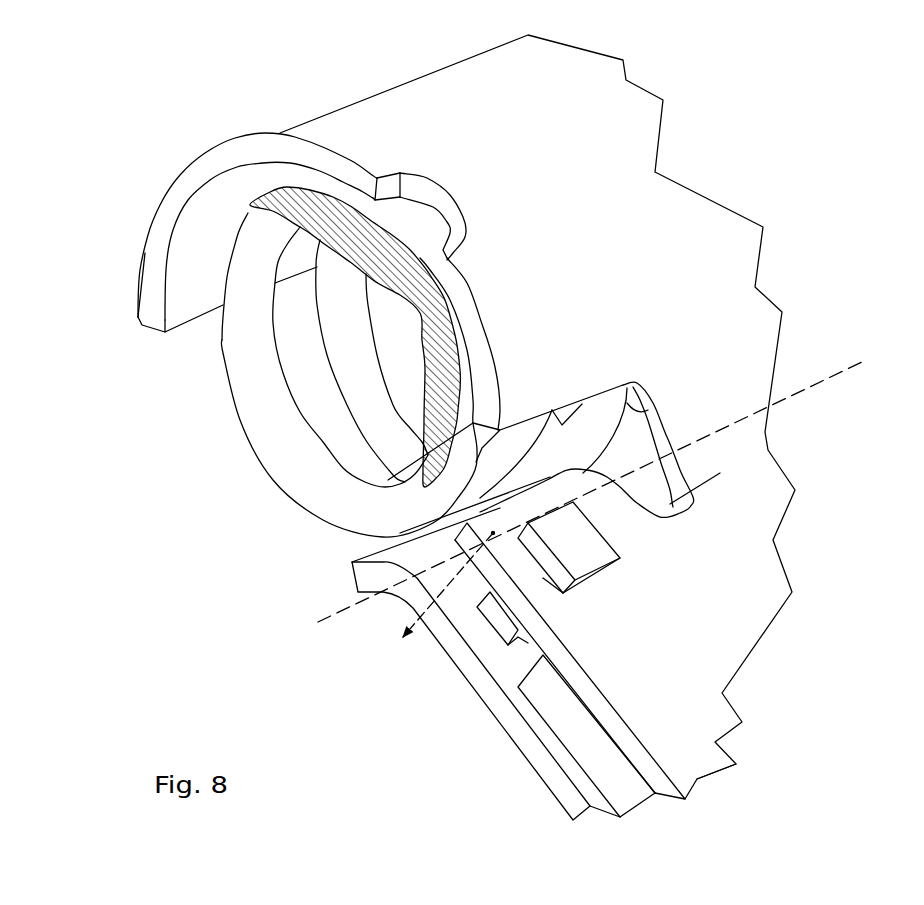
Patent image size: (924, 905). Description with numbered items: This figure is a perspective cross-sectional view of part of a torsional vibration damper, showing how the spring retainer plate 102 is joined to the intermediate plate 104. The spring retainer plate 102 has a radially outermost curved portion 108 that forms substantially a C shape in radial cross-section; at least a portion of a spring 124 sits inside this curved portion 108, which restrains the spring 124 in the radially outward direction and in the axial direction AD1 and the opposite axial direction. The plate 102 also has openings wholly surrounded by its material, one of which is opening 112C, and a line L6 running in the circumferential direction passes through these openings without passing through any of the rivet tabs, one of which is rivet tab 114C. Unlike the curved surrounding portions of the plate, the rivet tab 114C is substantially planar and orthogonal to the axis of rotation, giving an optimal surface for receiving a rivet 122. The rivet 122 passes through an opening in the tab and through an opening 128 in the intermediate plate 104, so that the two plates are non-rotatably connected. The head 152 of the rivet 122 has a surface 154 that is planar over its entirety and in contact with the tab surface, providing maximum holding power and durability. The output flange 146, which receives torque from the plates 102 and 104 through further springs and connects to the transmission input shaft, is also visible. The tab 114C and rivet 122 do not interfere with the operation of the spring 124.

The spring retainer plate 102 is at (418, 70).
The radially outermost curved portion 108 is at (145, 253).
The spring 124 is at (263, 403).
The rivet tab 114C is at (583, 475).
The opening 112C is at (720, 473).
The intermediate plate 104 is at (458, 676).
The rivet 122 is at (500, 615).
The opening 128 is at (522, 643).
The output flange 146 is at (543, 688).
The head 152 is at (587, 550).
The surface 154 is at (543, 578).
The line L6 is at (332, 612).
The axial direction AD1 is at (432, 610).